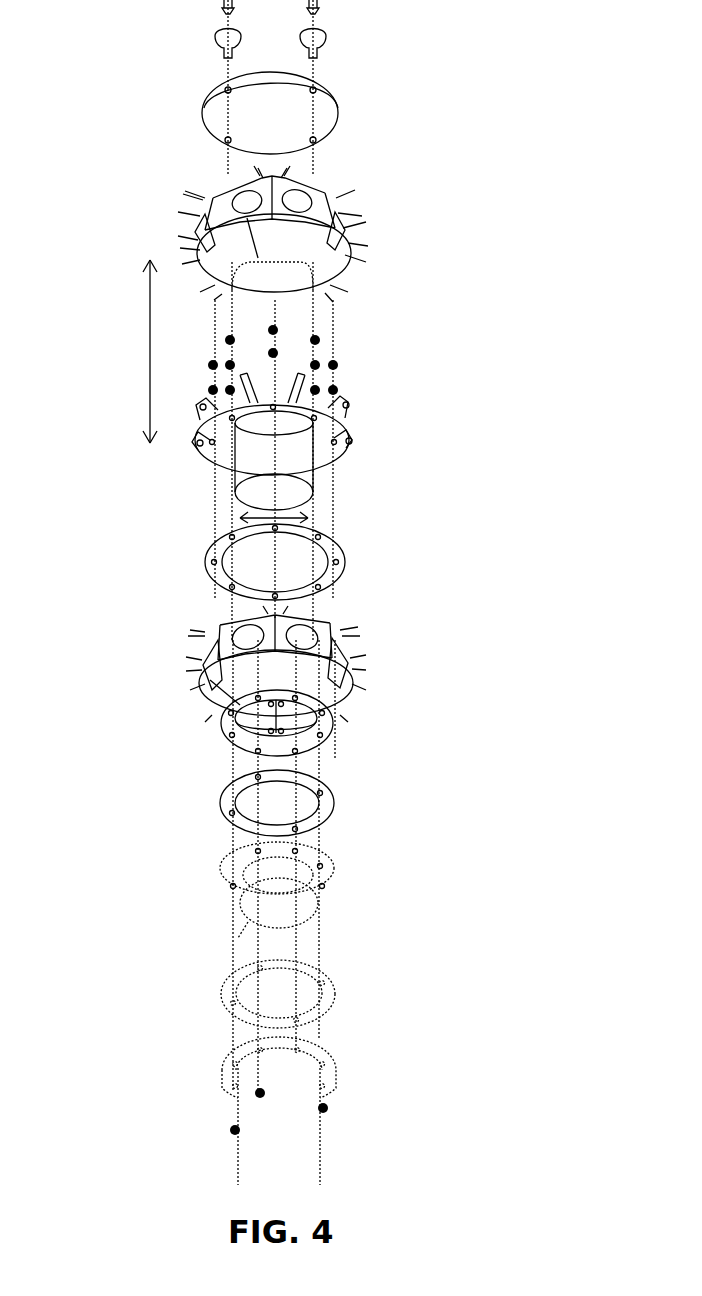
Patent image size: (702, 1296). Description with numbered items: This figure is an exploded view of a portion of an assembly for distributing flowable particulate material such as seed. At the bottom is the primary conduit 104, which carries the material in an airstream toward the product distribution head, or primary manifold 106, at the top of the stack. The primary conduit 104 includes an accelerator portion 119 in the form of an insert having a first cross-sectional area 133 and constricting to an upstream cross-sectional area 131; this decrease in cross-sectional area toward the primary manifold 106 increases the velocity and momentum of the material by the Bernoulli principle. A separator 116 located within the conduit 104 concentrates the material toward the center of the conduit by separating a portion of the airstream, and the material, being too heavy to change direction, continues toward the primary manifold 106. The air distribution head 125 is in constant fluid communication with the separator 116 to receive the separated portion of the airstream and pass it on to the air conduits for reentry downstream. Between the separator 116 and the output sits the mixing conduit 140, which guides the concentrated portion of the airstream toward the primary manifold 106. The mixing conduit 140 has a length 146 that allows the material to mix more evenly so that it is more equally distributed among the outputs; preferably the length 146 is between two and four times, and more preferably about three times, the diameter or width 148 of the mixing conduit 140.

The primary conduit 104 is at (302, 1145).
The primary manifold 106 is at (417, 193).
The separator 116 is at (332, 870).
The accelerator portion 119 is at (338, 880).
The air distribution head 125 is at (410, 672).
The upstream cross-sectional area 131 is at (230, 867).
The first cross-sectional area 133 is at (240, 934).
The mixing conduit 140 is at (428, 360).
The length 146 is at (150, 352).
The diameter or width 148 is at (300, 503).